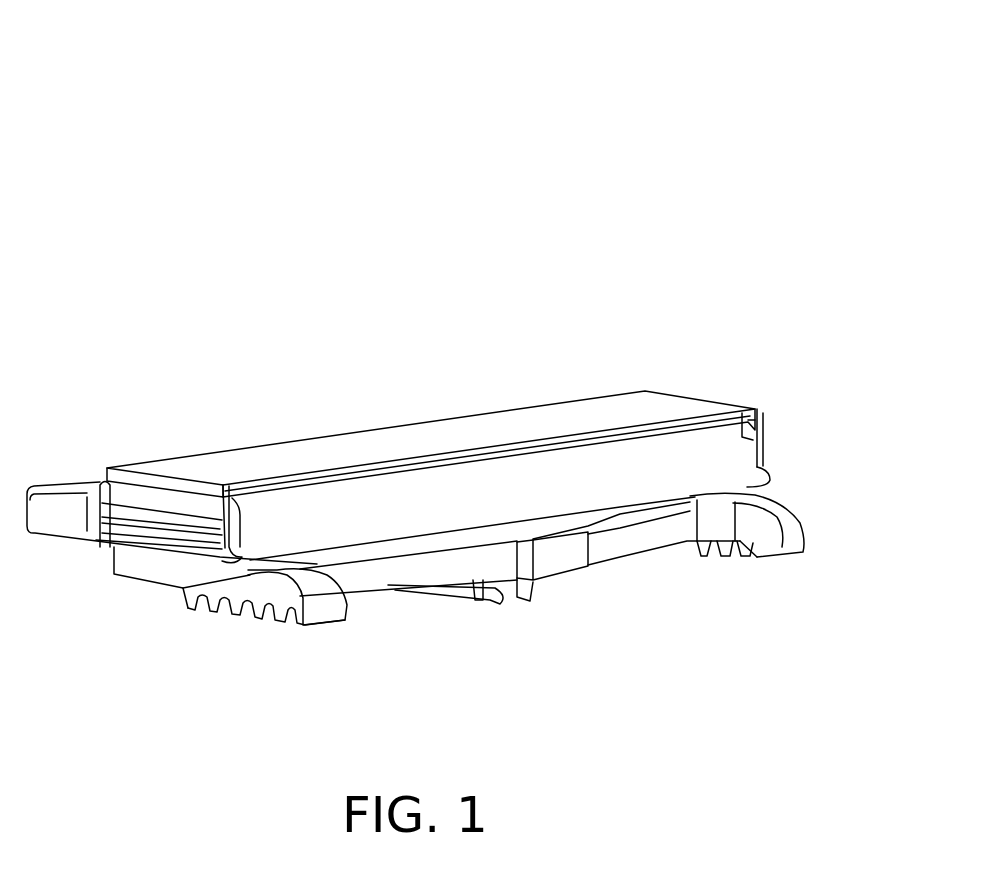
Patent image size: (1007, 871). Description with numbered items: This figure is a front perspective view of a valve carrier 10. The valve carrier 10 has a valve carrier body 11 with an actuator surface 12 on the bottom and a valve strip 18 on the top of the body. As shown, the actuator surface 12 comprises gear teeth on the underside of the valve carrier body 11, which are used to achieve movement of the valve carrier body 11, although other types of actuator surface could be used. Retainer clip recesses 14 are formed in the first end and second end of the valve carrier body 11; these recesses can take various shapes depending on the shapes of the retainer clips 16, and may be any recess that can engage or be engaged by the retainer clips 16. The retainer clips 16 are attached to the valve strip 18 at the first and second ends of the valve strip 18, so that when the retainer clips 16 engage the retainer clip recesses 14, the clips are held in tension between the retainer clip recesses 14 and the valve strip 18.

The valve carrier 10 is at (186, 135).
The valve carrier body 11 is at (575, 557).
The actuator surface 12 is at (221, 617).
The retainer clip recesses 14 is at (165, 543).
The retainer clips 16 is at (219, 546).
The valve strip 18 is at (484, 421).